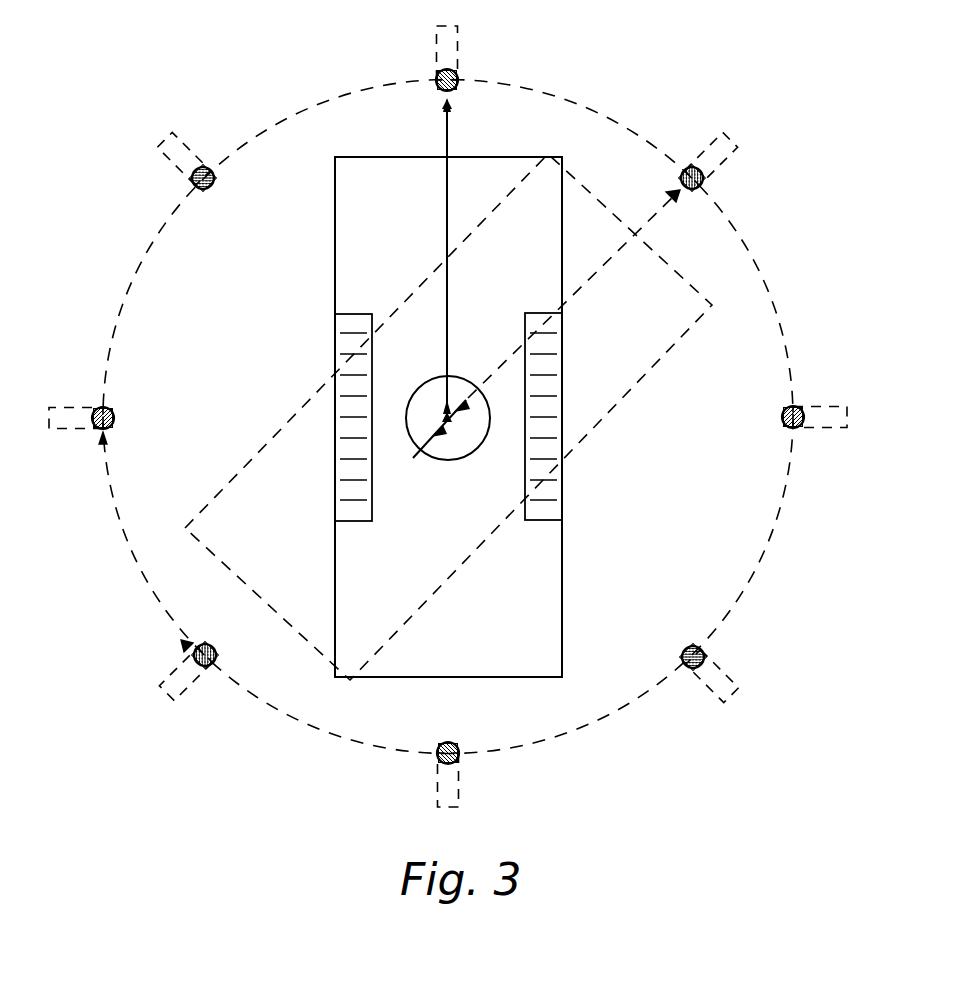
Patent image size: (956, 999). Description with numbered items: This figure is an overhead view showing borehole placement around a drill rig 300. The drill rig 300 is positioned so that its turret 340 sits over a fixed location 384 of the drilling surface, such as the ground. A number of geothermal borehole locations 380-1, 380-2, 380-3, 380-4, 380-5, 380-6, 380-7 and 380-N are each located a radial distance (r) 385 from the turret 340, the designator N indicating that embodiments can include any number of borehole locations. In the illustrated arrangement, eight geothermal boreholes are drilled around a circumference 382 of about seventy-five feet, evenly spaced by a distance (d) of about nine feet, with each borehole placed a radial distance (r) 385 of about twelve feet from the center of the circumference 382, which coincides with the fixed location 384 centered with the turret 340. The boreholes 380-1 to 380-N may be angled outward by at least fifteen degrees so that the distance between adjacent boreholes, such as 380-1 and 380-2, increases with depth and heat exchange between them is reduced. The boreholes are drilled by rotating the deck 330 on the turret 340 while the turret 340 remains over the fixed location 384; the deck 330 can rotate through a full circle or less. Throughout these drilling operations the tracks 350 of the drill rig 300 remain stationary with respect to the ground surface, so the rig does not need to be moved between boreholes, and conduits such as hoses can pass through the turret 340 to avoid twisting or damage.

The drill rig 300 is at (290, 237).
The deck 330 is at (563, 580).
The turret 340 is at (448, 460).
The tracks 350 is at (562, 489).
The circumference 382 is at (303, 110).
The fixed location 384 is at (427, 439).
The radial distance (r) 385 is at (605, 287).
The geothermal borehole location 380-1 is at (447, 68).
The geothermal borehole location 380-2 is at (700, 183).
The geothermal borehole location 380-3 is at (805, 421).
The geothermal borehole location 380-4 is at (703, 658).
The geothermal borehole location 380-5 is at (447, 766).
The geothermal borehole location 380-6 is at (212, 665).
The geothermal borehole location 380-7 is at (103, 407).
The geothermal borehole location 380-N is at (192, 181).